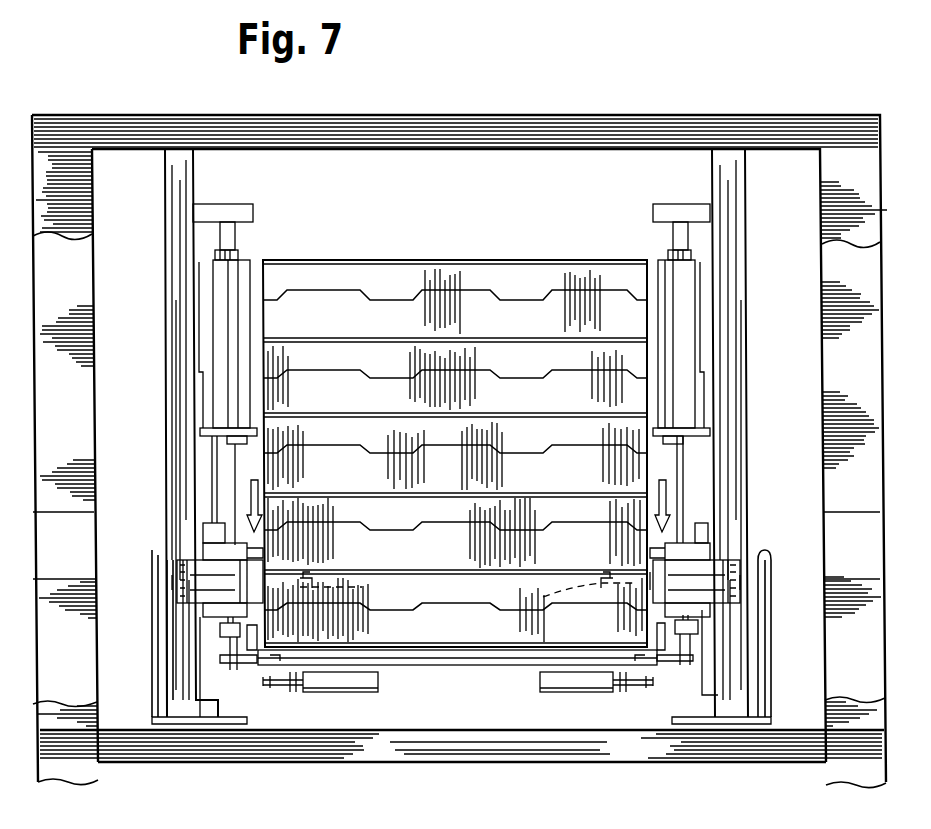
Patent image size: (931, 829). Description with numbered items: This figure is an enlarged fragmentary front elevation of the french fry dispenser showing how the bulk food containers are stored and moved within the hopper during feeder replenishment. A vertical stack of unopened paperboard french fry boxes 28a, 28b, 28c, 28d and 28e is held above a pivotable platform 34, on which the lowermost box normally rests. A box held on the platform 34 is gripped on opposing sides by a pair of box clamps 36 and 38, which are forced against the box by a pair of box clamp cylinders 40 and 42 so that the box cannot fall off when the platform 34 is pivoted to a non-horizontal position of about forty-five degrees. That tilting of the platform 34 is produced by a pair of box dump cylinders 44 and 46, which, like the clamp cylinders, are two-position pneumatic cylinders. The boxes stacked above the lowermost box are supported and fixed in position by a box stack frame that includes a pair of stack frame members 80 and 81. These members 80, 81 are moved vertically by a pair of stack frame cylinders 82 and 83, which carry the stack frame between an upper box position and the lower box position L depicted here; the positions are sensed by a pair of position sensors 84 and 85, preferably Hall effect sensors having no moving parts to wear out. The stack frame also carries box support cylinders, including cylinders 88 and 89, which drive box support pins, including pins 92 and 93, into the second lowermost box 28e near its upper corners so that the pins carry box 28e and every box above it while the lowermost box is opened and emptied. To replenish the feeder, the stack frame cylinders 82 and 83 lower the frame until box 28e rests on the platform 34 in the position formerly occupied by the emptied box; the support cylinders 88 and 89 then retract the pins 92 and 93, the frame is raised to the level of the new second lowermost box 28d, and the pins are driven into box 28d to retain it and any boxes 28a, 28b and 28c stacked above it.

The box dump cylinder 44 is at (200, 262).
The box dump cylinder 46 is at (698, 267).
The stack frame cylinder 82 is at (240, 283).
The stack frame cylinder 83 is at (668, 278).
The french fry box 28a is at (468, 303).
The french fry box 28b is at (572, 405).
The french fry box 28c is at (572, 482).
The french fry box 28d is at (585, 562).
The second lowermost box 28e is at (605, 643).
The position sensor 84 is at (210, 525).
The position sensor 85 is at (700, 520).
The box support cylinder 88 is at (198, 575).
The box support cylinder 89 is at (715, 577).
The stack frame member 80 is at (247, 553).
The stack frame member 81 is at (663, 543).
The box support pin 92 is at (365, 589).
The box support pin 93 is at (527, 612).
The pivotable platform 34 is at (482, 658).
The lower box position L is at (440, 633).
The box clamp 36 is at (250, 638).
The box clamp 38 is at (673, 653).
The box clamp cylinder 40 is at (353, 690).
The box clamp cylinder 42 is at (573, 690).